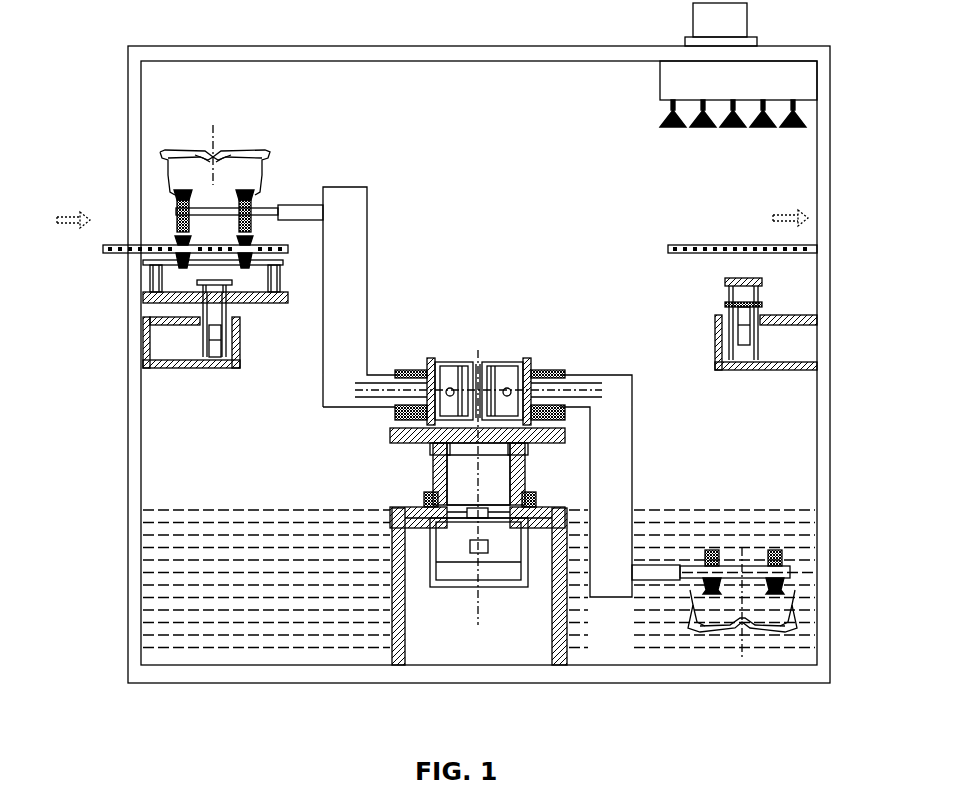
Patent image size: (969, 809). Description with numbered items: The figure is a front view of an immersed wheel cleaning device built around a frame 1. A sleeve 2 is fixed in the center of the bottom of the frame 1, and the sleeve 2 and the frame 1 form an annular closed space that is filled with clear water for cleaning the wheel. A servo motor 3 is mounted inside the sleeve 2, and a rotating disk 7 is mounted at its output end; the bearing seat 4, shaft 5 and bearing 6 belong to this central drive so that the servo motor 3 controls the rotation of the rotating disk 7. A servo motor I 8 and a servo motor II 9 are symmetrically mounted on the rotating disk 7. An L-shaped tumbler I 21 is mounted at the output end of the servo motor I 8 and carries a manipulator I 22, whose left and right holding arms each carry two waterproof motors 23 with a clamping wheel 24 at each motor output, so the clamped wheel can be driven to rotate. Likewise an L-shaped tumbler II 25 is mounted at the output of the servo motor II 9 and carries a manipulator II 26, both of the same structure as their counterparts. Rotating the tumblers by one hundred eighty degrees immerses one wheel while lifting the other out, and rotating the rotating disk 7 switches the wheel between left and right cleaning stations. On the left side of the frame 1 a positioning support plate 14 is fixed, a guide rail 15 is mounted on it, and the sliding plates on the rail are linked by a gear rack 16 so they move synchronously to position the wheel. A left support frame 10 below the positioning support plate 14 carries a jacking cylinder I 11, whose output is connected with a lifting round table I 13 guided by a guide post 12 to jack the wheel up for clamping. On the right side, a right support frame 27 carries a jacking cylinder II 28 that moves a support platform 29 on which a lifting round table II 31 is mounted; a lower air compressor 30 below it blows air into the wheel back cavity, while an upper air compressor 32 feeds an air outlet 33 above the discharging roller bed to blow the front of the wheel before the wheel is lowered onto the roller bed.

The frame 1 is at (141, 527).
The sleeve 2 is at (400, 570).
The servo motor 3 is at (437, 543).
The bearing seat 4 is at (537, 506).
The shaft 5 is at (493, 487).
The bearing 6 is at (523, 453).
The rotating disk 7 is at (390, 443).
The servo motor I 8 is at (463, 362).
The servo motor II 9 is at (497, 362).
The left support frame 10 is at (200, 360).
The jacking cylinder I 11 is at (203, 340).
The guide post 12 is at (203, 312).
The lifting round table I 13 is at (197, 280).
The positioning support plate 14 is at (285, 297).
The guide rail 15 is at (285, 283).
The gear rack 16 is at (277, 260).
The L-shaped tumbler I 21 is at (343, 200).
The manipulator I 22 is at (285, 204).
The waterproof motors 23 is at (178, 223).
The clamping wheels 24 is at (178, 195).
The L-shaped tumbler II 25 is at (619, 524).
The manipulator II 26 is at (660, 568).
The right support frame 27 is at (760, 365).
The jacking cylinder II 28 is at (760, 325).
The support platform 29 is at (760, 305).
The lower air compressor 30 is at (760, 285).
The lifting round table II 31 is at (742, 280).
The upper air compressor 32 is at (757, 44).
The air outlet 33 is at (797, 107).